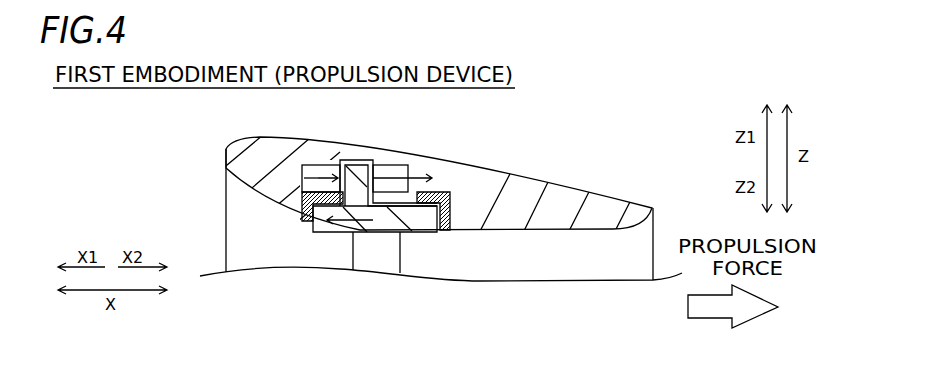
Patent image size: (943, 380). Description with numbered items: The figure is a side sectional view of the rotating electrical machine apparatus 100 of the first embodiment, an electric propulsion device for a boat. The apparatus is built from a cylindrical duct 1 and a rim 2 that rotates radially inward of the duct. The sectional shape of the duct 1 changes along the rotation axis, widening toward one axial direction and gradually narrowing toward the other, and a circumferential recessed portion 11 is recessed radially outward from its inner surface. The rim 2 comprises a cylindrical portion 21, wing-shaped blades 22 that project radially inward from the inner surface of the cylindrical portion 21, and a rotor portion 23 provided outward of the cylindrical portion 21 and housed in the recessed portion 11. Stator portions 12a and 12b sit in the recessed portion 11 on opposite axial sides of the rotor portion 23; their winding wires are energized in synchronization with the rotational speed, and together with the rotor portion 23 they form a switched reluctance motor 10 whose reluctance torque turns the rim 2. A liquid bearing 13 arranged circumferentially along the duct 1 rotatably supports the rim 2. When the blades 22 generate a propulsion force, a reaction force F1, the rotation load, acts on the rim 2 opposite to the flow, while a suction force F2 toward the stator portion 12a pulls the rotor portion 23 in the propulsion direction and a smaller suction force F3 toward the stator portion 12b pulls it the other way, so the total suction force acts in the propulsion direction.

The duct 1 is at (452, 198).
The rim 2 is at (412, 232).
The motor 10 is at (455, 241).
The recessed portion 11 is at (360, 158).
The stator portion 12a is at (397, 163).
The stator portion 12b is at (305, 163).
The liquid bearing 13 is at (310, 200).
The cylindrical portion 21 is at (328, 220).
The blades 22 is at (397, 262).
The rotor portion 23 is at (344, 158).
The rotating electrical machine apparatus 100 is at (528, 147).
The force F1 is at (343, 234).
The suction force F2 is at (426, 163).
The suction force F3 is at (331, 172).